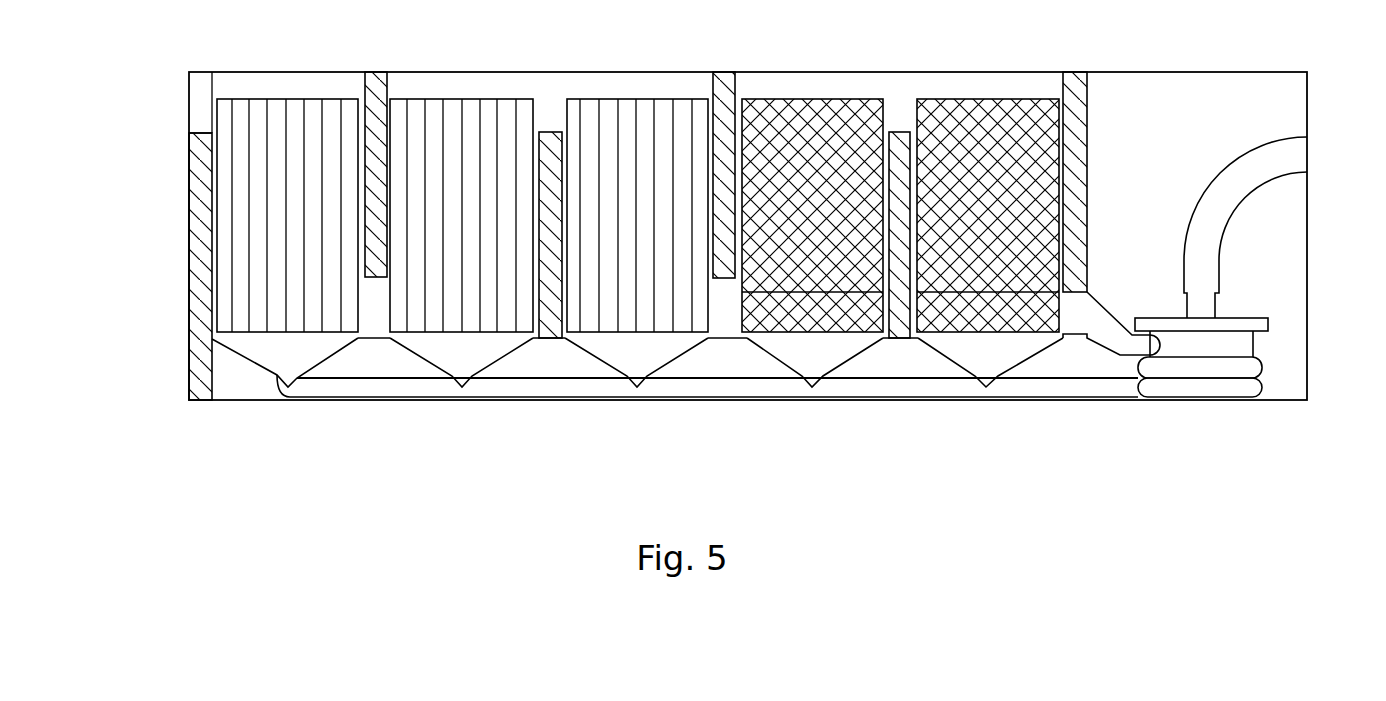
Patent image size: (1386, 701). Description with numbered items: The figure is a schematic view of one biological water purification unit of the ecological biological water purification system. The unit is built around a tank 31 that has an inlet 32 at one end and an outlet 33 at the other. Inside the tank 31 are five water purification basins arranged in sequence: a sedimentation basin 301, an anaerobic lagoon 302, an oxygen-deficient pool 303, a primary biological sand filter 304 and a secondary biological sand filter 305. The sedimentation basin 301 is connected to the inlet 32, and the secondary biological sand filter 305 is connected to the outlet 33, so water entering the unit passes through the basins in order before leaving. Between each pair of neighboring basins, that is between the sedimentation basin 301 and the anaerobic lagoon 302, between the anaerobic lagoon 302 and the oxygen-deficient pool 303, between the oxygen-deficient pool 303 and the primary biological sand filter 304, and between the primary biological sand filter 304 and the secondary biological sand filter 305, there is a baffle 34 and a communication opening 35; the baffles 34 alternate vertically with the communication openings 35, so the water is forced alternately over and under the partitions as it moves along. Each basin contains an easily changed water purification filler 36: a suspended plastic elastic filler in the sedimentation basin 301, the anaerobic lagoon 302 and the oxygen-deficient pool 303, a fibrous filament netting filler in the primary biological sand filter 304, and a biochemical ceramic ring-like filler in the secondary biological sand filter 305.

The tank 31 is at (197, 283).
The inlet 32 is at (200, 102).
The outlet 33 is at (1295, 158).
The baffle 34 is at (373, 162).
The communication opening 35 is at (550, 107).
The water purification filler 36 is at (290, 117).
The sedimentation basin 301 is at (267, 348).
The anaerobic lagoon 302 is at (485, 352).
The oxygen-deficient pool 303 is at (660, 352).
The primary biological sand filter 304 is at (833, 352).
The secondary biological sand filter 305 is at (1010, 348).